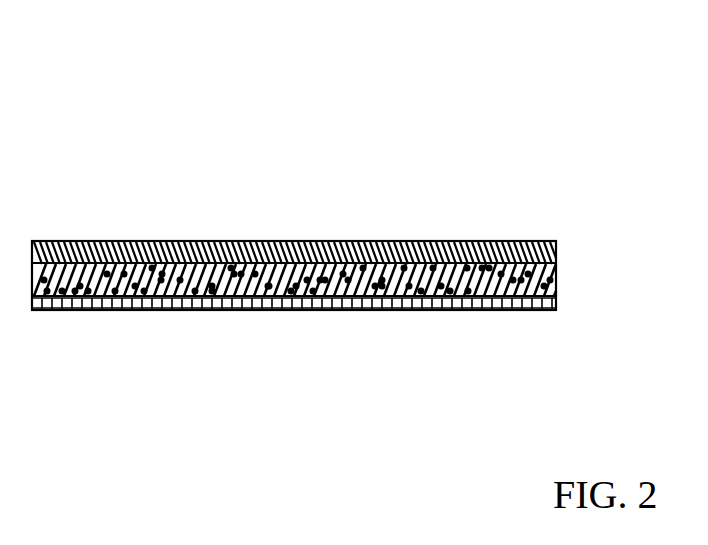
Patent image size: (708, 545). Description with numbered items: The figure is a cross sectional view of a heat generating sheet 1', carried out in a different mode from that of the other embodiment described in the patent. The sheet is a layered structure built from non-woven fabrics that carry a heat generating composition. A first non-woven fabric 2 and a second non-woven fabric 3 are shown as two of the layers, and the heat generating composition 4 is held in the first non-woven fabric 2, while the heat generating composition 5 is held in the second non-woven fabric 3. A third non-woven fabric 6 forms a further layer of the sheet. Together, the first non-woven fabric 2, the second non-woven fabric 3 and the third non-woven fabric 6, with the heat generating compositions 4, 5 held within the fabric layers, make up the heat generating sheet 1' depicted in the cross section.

The heat generating sheet 1' is at (294, 171).
The first non-woven fabric 2 is at (295, 380).
The second non-woven fabric 3 is at (295, 148).
The heat generating composition 4 is at (297, 381).
The heat generating composition 5 is at (294, 137).
The third non-woven fabric 6 is at (294, 397).